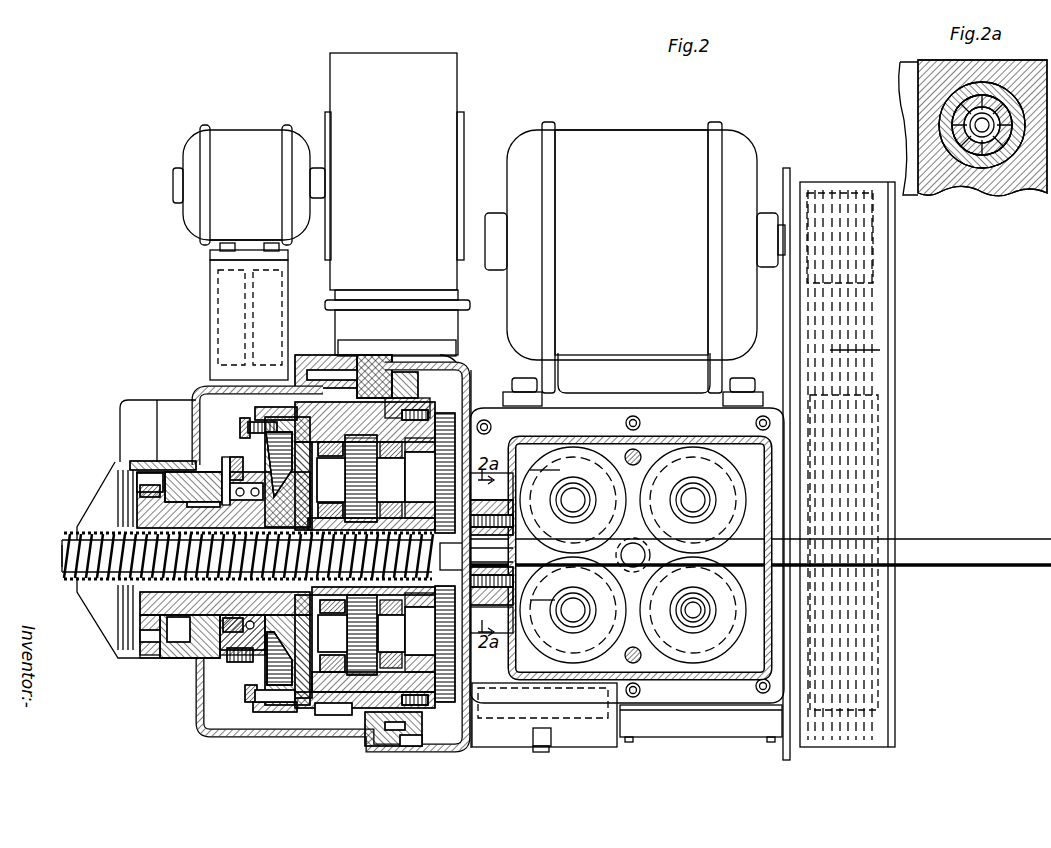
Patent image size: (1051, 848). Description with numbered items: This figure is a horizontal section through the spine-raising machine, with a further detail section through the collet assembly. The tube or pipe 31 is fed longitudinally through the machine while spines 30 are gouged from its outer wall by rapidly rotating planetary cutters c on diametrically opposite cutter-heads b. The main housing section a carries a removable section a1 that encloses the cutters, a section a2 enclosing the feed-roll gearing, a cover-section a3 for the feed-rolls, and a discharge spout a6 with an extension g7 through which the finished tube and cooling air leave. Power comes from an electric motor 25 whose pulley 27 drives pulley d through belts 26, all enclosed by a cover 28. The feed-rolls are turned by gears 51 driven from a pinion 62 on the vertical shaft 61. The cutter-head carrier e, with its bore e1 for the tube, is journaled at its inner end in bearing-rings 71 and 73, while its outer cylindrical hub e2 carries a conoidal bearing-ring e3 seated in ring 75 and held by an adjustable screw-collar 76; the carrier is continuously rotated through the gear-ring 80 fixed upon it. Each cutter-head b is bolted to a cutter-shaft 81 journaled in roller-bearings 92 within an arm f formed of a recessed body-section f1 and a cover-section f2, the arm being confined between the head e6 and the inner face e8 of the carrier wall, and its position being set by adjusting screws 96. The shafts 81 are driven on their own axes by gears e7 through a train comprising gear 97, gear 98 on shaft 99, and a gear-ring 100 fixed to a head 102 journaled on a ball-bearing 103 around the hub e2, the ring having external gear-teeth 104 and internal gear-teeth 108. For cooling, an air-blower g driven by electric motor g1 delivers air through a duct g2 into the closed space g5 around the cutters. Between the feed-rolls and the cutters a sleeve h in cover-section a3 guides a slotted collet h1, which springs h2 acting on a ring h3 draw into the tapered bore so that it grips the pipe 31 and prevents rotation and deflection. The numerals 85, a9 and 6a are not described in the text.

In FIG. 2, the electric motor 25 is at (635, 264).
In FIG. 2, the belts 26 is at (850, 356).
In FIG. 2, the pulley 27 is at (873, 258).
In FIG. 2, the cover 28 is at (896, 436).
In FIG. 2, the spines 30 is at (80, 565).
In FIG. 2, the tube or pipe 31 is at (118, 578).
In FIG. 2A, the tube or pipe 31 is at (972, 170).
In FIG. 2, the gear 51 is at (735, 452).
In FIG. 2, the vertical shaft 61 is at (633, 550).
In FIG. 2, the pinion 62 is at (688, 602).
In FIG. 2, the bearing-ring 71 is at (372, 746).
In FIG. 2, the cylindrical bearing-ring 73 is at (415, 748).
In FIG. 2, the conoidal bearing-ring 75 is at (188, 472).
In FIG. 2, the adjustable screw-collar 76 is at (140, 492).
In FIG. 2, the gear-ring 80 is at (325, 716).
In FIG. 2, the cutter-shaft 81 is at (391, 555).
In FIG. 2, the bushing 85 is at (425, 440).
In FIG. 2, the roller-bearings 92 is at (325, 440).
In FIG. 2, the adjusting screws 96 is at (585, 452).
In FIG. 2, the gear 97 is at (575, 505).
In FIG. 2, the gear 98 is at (638, 452).
In FIG. 2, the shaft 99 is at (704, 456).
In FIG. 2, the gear-ring 100 is at (270, 702).
In FIG. 2, the head 102 is at (268, 665).
In FIG. 2, the ball-bearing 103 is at (236, 458).
In FIG. 2, the external gear-teeth 104 is at (262, 776).
In FIG. 2, the internal gear-teeth 108 is at (250, 424).
In FIG. 2, the main housing section a is at (200, 388).
In FIG. 2, the housing section a1 is at (472, 392).
In FIG. 2, the housing section a2 is at (738, 690).
In FIG. 2, the cover-section a3 is at (525, 450).
In FIG. 2A, the cover-section a3 is at (930, 110).
In FIG. 2, the discharge spout a6 is at (95, 620).
In FIG. 2, the lug a9 is at (555, 750).
In FIG. 2, the cutter-head b is at (448, 700).
In FIG. 2, the cutters c is at (478, 460).
In FIG. 2, the pulley d is at (878, 660).
In FIG. 2, the cutter-head carrier e is at (300, 405).
In FIG. 2, the bore e1 is at (185, 658).
In FIG. 2, the cylindrical hub e2 is at (150, 645).
In FIG. 2, the conoidal bearing-ring e3 is at (155, 462).
In FIG. 2, the head e6 is at (446, 788).
In FIG. 2, the gear e7 is at (347, 555).
In FIG. 2, the inner face of carrier wall e8 is at (240, 445).
In FIG. 2, the arm f is at (376, 370).
In FIG. 2, the body-section f1 is at (340, 372).
In FIG. 2, the cover-section f2 is at (452, 358).
In FIG. 2, the air-blower g is at (397, 204).
In FIG. 2, the electric motor g1 is at (249, 252).
In FIG. 2, the duct g2 is at (397, 336).
In FIG. 2, the closed space g5 is at (478, 750).
In FIG. 2, the extension of spout g7 is at (120, 452).
In FIG. 2, the sleeve h is at (491, 554).
In FIG. 2A, the sleeve h is at (1000, 165).
In FIG. 2, the slotted collet h1 is at (476, 551).
In FIG. 2A, the slotted collet h1 is at (950, 135).
In FIG. 2, the springs h2 is at (545, 483).
In FIG. 2A, the springs h2 is at (985, 175).
In FIG. 2, the ring h3 is at (542, 600).
In FIG. 2, the wire 6a is at (768, 540).